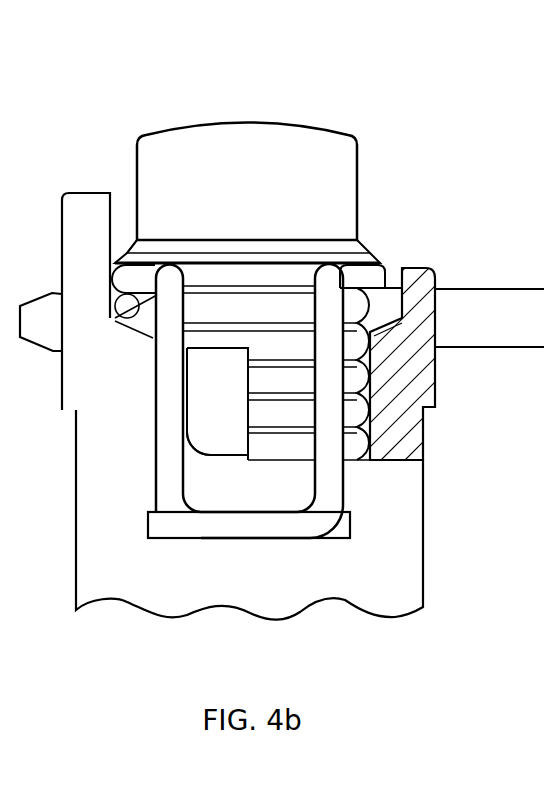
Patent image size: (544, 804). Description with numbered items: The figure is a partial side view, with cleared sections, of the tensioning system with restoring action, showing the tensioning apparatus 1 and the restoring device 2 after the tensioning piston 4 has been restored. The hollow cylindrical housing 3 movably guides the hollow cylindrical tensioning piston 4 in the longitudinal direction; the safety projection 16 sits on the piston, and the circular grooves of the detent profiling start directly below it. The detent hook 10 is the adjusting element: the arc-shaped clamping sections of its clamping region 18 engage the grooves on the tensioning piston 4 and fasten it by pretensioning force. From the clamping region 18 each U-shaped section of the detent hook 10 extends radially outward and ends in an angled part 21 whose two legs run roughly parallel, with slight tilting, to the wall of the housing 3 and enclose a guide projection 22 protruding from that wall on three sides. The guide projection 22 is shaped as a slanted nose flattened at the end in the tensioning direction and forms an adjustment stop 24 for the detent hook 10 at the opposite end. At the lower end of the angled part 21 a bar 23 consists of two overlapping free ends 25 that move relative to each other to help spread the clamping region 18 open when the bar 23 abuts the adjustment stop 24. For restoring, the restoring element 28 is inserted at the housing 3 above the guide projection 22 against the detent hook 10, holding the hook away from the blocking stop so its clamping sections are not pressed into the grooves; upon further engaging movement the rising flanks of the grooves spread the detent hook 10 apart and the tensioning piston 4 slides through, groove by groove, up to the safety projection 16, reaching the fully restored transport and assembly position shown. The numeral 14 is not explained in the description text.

The tensioning apparatus 1 is at (247, 165).
The restoring device 2 is at (388, 262).
The hollow cylindrical housing 3 is at (338, 588).
The tensioning piston 4 is at (238, 128).
The detent hook 10 is at (137, 318).
The housing wall 14 is at (60, 245).
The safety projection 16 is at (135, 238).
The clamping region 18 is at (373, 254).
The angled part 21 is at (333, 478).
The guide projection 22 is at (212, 405).
The bar 23 is at (260, 541).
The adjustment stop 24 is at (222, 457).
The free ends 25 is at (342, 527).
The restoring element 28 is at (497, 296).